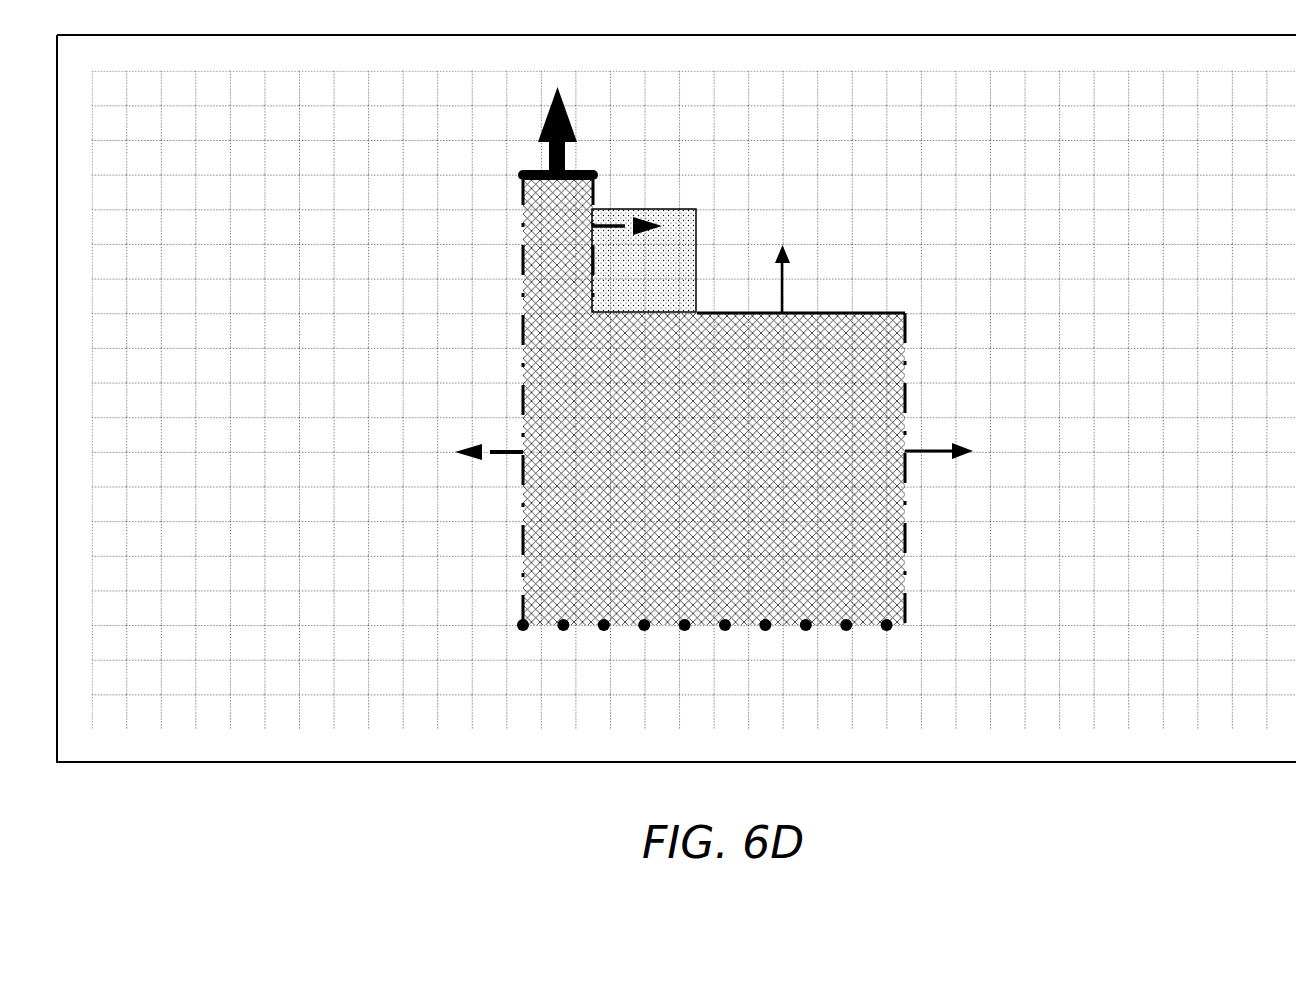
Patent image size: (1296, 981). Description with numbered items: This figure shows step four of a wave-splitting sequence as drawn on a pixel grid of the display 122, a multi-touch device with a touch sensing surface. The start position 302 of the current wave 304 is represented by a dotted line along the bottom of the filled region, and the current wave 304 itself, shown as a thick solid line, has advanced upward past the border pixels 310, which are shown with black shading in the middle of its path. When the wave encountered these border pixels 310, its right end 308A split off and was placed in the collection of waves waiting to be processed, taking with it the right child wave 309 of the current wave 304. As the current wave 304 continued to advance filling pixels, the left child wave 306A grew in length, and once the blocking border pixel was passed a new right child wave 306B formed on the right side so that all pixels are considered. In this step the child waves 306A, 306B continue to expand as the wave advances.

The display 122 is at (342, 765).
The start position 302 is at (838, 627).
The current wave 304 is at (523, 170).
The left child wave 306A is at (523, 387).
The right child wave 306B is at (595, 182).
The right end wave 308A is at (833, 312).
The right child wave 309 is at (905, 383).
The border pixels 310 is at (675, 208).